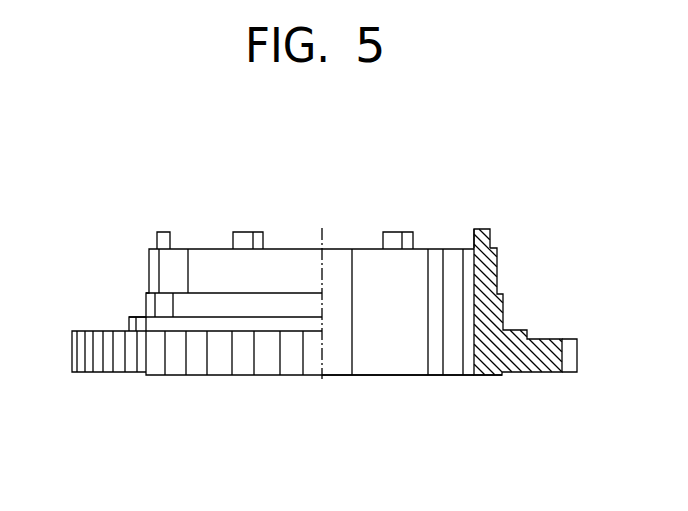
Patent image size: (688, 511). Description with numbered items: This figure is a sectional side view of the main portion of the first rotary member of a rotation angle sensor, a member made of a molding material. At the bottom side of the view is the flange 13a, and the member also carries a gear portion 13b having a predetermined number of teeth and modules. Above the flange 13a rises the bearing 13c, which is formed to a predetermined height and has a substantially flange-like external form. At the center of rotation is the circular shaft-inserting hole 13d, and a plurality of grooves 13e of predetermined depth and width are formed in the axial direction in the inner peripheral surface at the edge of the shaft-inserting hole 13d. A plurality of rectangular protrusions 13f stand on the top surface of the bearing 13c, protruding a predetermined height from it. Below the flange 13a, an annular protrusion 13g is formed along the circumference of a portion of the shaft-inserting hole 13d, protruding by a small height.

The flange 13a is at (543, 372).
The gear portion 13b is at (72, 362).
The bearing 13c is at (489, 283).
The shaft-inserting hole 13d is at (397, 358).
The grooves 13e is at (453, 249).
The rectangular protrusions 13f is at (393, 232).
The annular protrusion 13g is at (242, 375).